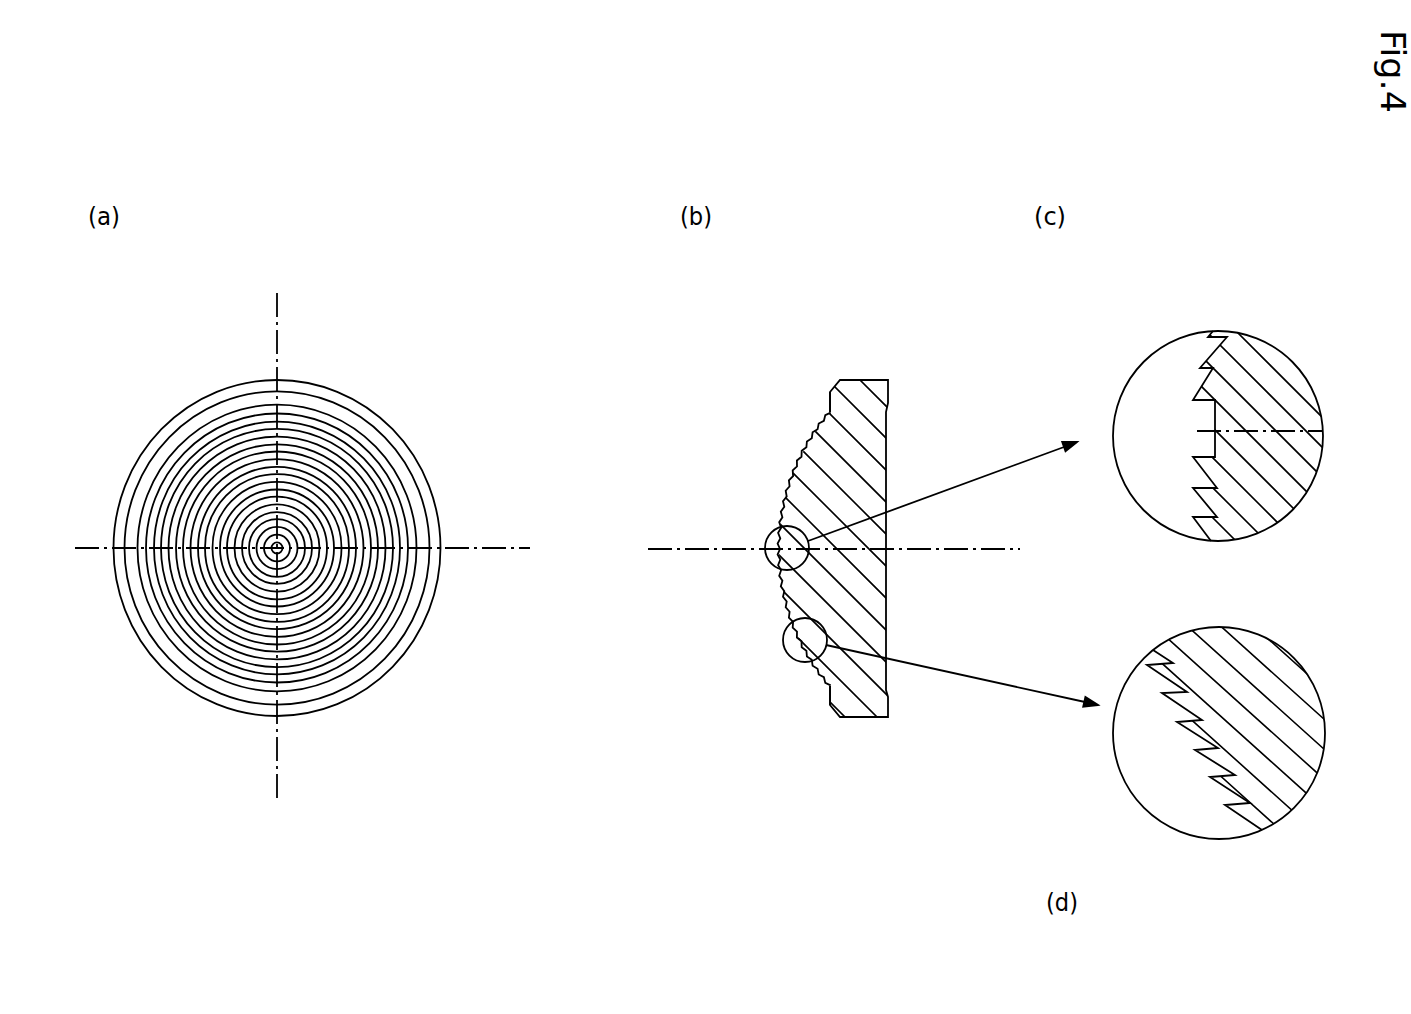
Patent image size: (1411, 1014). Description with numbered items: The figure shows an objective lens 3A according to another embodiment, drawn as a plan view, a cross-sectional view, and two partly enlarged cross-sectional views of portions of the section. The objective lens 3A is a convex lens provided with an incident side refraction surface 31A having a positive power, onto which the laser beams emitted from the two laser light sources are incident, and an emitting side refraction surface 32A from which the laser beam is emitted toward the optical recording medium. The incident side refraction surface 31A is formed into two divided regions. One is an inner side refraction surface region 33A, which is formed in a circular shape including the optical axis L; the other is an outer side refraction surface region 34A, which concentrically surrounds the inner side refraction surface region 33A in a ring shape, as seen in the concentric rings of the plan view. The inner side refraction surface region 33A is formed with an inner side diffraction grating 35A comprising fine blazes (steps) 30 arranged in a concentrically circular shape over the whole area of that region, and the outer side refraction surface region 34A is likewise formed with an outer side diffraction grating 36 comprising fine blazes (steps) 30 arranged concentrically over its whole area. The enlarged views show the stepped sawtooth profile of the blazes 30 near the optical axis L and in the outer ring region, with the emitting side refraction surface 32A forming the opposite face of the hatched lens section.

The objective lens 3A is at (310, 372).
The incident side refraction surface 31A is at (739, 515).
The emitting side refraction surface 32A is at (886, 440).
The inner side refraction surface region 33A is at (308, 498).
The inner side diffraction grating 35A is at (731, 507).
The outer side refraction surface region 34A is at (370, 498).
The outer side diffraction grating 36 is at (688, 593).
The blazes (steps) 30 is at (1206, 340).
The optical axis L is at (970, 549).